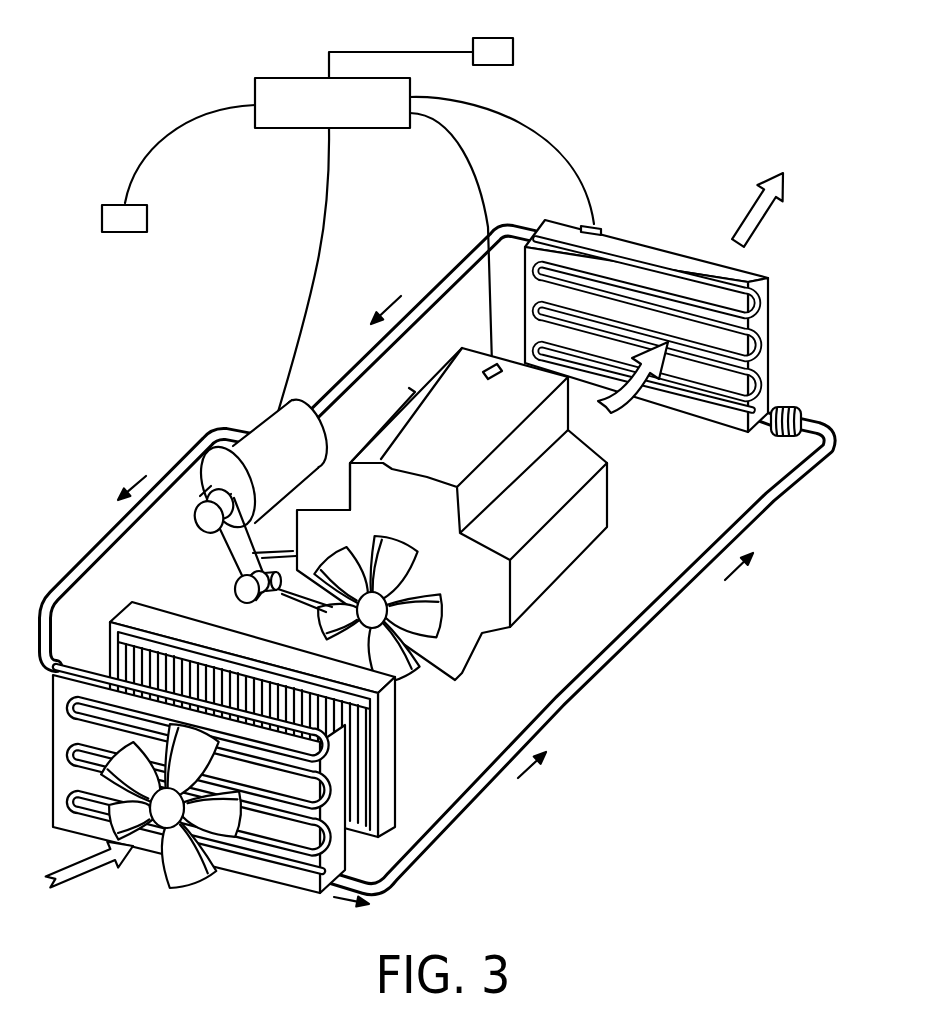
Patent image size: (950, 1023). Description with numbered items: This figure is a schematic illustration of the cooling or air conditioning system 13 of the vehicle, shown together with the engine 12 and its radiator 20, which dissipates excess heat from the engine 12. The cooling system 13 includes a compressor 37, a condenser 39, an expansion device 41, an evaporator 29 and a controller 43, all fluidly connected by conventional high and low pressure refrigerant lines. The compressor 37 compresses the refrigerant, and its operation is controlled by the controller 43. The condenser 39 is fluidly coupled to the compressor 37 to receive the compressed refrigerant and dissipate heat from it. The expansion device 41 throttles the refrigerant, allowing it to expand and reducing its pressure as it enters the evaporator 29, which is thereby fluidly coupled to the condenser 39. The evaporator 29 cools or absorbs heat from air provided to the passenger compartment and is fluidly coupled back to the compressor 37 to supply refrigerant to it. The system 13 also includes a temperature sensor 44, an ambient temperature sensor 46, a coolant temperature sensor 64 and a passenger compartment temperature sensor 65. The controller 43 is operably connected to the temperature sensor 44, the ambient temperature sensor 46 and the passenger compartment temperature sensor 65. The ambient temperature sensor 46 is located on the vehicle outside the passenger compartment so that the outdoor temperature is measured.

The engine 12 is at (501, 463).
The cooling or air conditioning system 13 is at (169, 93).
The radiator 20 is at (140, 617).
The evaporator 29 is at (764, 316).
The compressor 37 is at (265, 432).
The condenser 39 is at (268, 870).
The expansion device 41 is at (788, 407).
The controller 43 is at (293, 78).
The temperature sensor 44 is at (596, 227).
The ambient temperature sensor 46 is at (107, 205).
The coolant temperature sensor 64 is at (487, 368).
The passenger compartment temperature sensor 65 is at (513, 52).